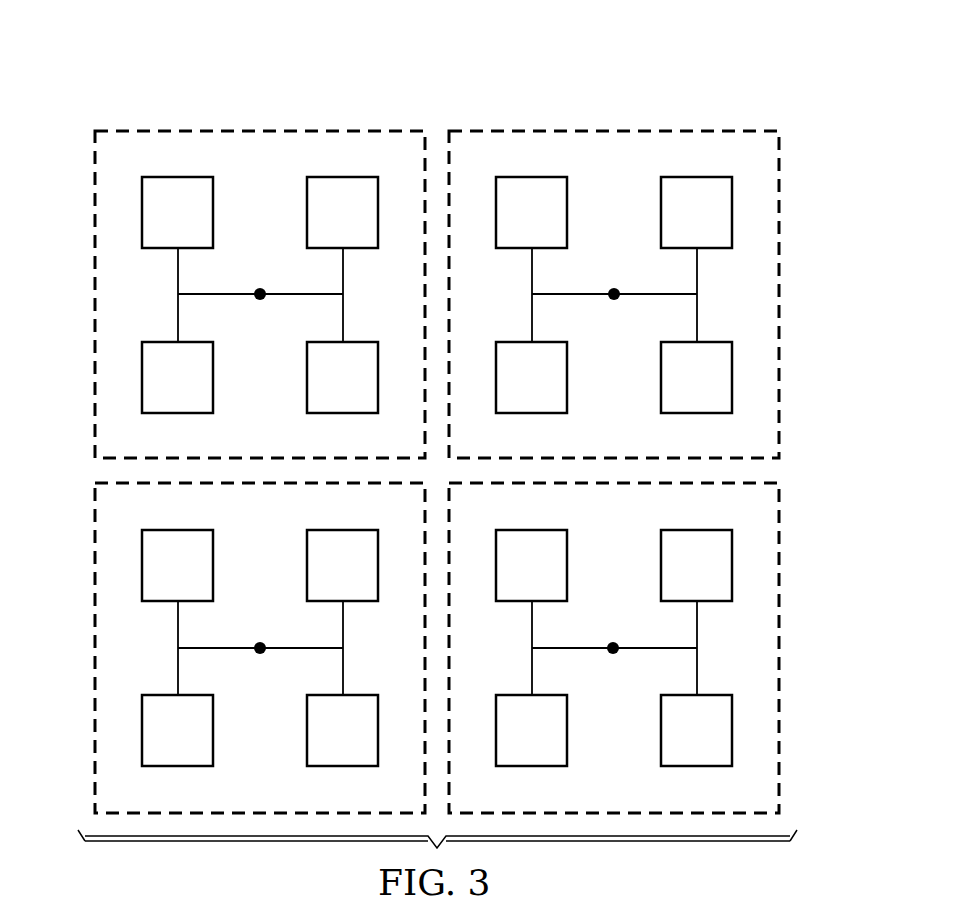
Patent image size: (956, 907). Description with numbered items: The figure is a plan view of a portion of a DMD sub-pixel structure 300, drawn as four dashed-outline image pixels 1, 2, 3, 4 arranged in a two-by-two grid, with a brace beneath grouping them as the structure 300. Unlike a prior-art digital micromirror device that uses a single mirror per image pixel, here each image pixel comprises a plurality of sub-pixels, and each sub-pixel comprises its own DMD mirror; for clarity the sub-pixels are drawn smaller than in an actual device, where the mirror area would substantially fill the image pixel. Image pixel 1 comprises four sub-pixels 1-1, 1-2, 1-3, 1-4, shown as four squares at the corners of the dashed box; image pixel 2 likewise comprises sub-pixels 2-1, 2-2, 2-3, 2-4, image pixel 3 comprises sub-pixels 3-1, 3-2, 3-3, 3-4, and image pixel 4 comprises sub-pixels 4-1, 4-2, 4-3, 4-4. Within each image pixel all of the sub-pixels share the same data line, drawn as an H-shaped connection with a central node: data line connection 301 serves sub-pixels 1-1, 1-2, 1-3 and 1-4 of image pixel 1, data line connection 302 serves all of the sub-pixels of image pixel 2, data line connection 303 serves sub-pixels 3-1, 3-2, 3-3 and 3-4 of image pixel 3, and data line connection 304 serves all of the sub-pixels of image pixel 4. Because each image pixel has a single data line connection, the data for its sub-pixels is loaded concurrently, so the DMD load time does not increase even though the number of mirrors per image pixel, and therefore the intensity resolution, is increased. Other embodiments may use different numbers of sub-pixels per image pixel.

The DMD sub-pixel structure 300 is at (636, 71).
The image pixel 1 is at (82, 251).
The image pixel 2 is at (795, 252).
The image pixel 3 is at (82, 690).
The image pixel 4 is at (794, 692).
The data line connection 301 is at (260, 288).
The data line connection 302 is at (614, 288).
The data line connection 303 is at (260, 655).
The data line connection 304 is at (613, 655).
The sub-pixel 1-1 is at (177, 235).
The sub-pixel 1-2 is at (342, 235).
The sub-pixel 1-3 is at (177, 353).
The sub-pixel 1-4 is at (342, 353).
The sub-pixel 2-1 is at (531, 235).
The sub-pixel 2-2 is at (696, 235).
The sub-pixel 2-3 is at (531, 353).
The sub-pixel 2-4 is at (696, 353).
The sub-pixel 3-1 is at (177, 589).
The sub-pixel 3-2 is at (342, 589).
The sub-pixel 3-3 is at (177, 707).
The sub-pixel 3-4 is at (342, 707).
The sub-pixel 4-1 is at (531, 589).
The sub-pixel 4-2 is at (696, 589).
The sub-pixel 4-3 is at (531, 707).
The sub-pixel 4-4 is at (696, 707).